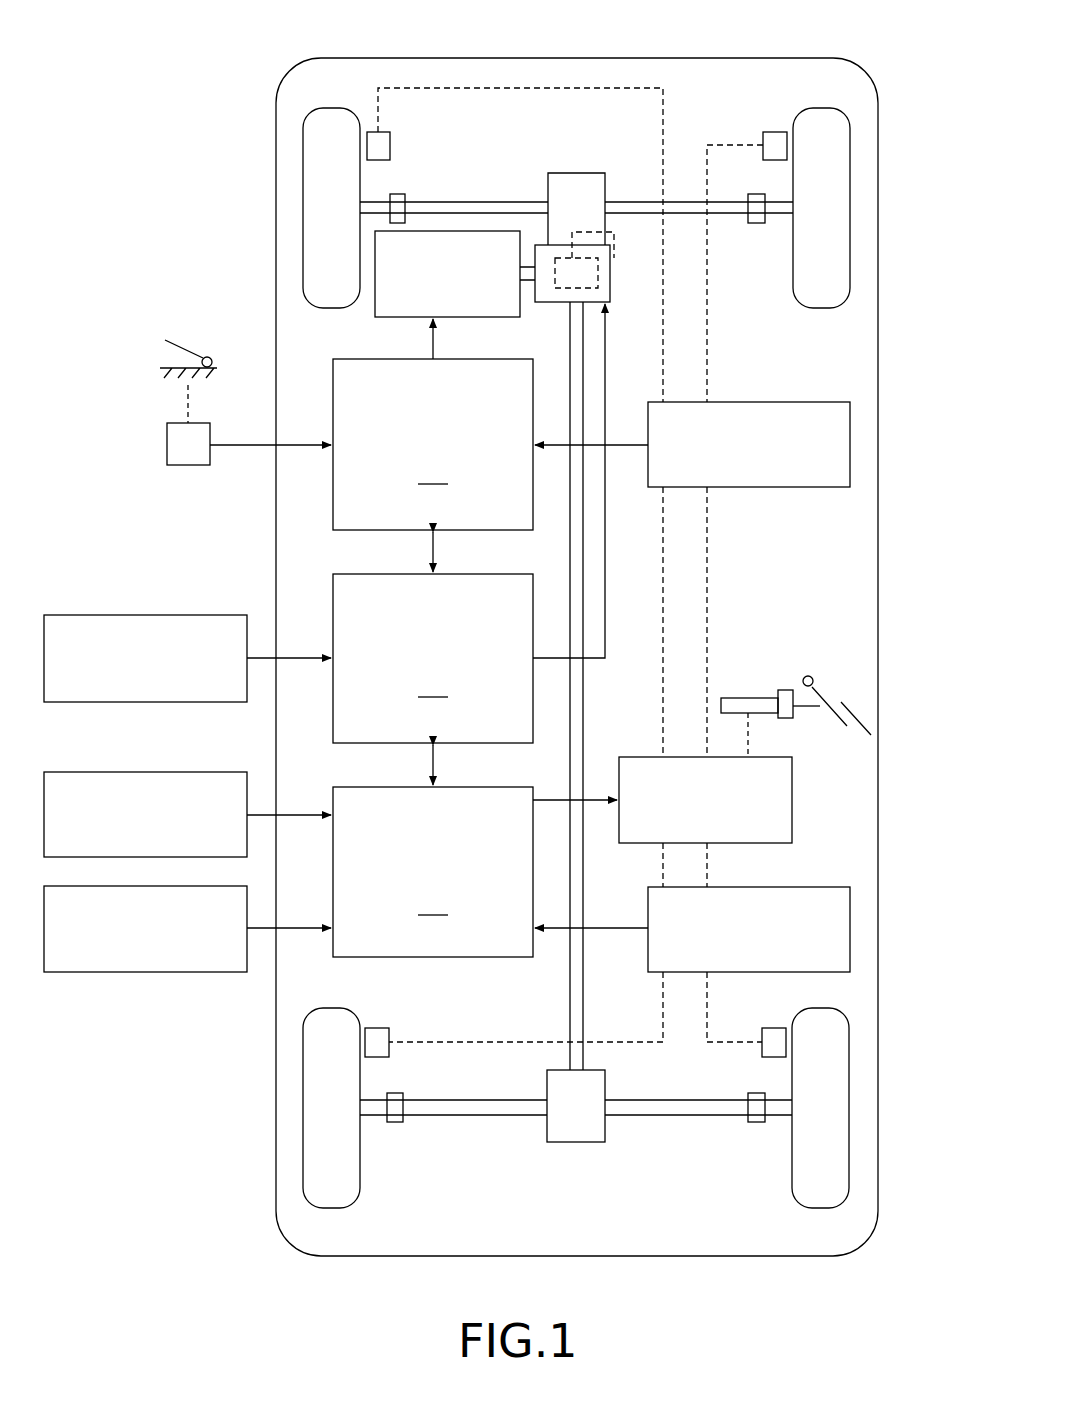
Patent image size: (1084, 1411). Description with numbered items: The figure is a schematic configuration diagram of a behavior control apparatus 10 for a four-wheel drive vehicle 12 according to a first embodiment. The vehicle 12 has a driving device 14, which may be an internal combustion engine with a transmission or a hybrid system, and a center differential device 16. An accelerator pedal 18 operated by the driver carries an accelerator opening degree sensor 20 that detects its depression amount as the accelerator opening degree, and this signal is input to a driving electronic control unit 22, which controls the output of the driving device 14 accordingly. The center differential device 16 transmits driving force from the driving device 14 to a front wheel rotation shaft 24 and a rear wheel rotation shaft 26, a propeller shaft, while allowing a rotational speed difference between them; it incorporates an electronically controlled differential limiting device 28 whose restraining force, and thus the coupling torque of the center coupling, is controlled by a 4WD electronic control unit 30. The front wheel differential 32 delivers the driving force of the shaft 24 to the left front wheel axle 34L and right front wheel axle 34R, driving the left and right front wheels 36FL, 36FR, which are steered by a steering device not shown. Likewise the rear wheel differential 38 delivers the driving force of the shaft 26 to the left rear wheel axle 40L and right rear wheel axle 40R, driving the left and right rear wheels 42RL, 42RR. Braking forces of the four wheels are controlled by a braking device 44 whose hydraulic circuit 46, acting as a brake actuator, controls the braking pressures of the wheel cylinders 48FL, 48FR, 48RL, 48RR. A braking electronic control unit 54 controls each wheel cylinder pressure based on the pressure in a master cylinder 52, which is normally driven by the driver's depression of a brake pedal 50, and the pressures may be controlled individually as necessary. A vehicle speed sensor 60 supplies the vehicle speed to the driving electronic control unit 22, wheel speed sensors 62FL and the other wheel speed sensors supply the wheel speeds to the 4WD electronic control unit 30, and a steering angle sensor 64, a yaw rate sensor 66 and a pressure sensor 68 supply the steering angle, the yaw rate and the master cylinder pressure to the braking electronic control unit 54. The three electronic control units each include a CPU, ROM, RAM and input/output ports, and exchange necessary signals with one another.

The behavior control apparatus 10 is at (638, 76).
The four-wheel drive vehicle 12 is at (878, 485).
The driving device 14 is at (405, 318).
The center differential device 16 is at (610, 283).
The accelerator pedal 18 is at (180, 345).
The accelerator opening degree sensor 20 is at (190, 465).
The driving electronic control unit 22 is at (433, 424).
The front wheel rotation shaft 24 is at (614, 240).
The rear wheel rotation shaft 26 is at (600, 583).
The differential limiting device 28 is at (568, 302).
The 4WD electronic control unit 30 is at (433, 637).
The front wheel differential 32 is at (555, 173).
The left front wheel axle 34L is at (475, 202).
The right front wheel axle 34R is at (637, 202).
The left front wheel 36FL is at (303, 207).
The right front wheel 36FR is at (850, 207).
The rear wheel differential 38 is at (575, 1142).
The left rear wheel axle 40L is at (483, 1115).
The right rear wheel axle 40R is at (697, 1115).
The left rear wheel 42RL is at (303, 1105).
The right rear wheel 42RR is at (849, 1105).
The braking device 44 is at (788, 654).
The hydraulic circuit 46 is at (792, 797).
The left front wheel cylinder 48FL is at (416, 126).
The right front wheel cylinder 48FR is at (774, 132).
The left rear wheel cylinder 48RL is at (377, 1028).
The right rear wheel cylinder 48RR is at (775, 1057).
The brake pedal 50 is at (852, 710).
The master cylinder 52 is at (750, 698).
The braking electronic control unit 54 is at (433, 851).
The vehicle speed sensor 60 is at (765, 402).
The wheel speed sensor 62FL is at (148, 615).
The steering angle sensor 64 is at (148, 772).
The yaw rate sensor 66 is at (141, 972).
The pressure sensor 68 is at (820, 887).